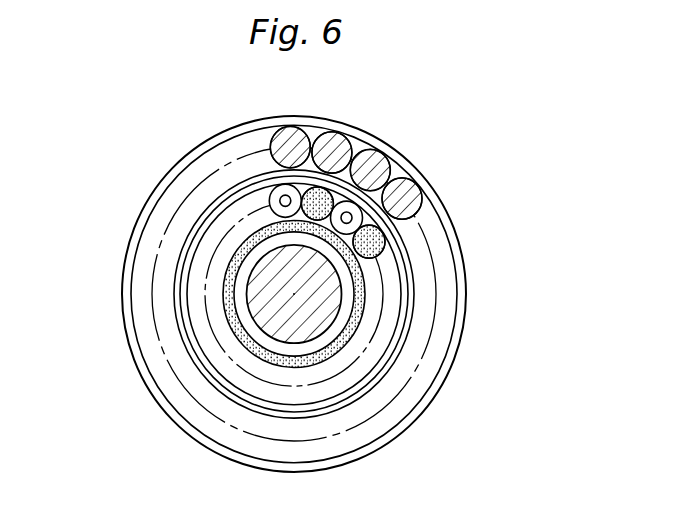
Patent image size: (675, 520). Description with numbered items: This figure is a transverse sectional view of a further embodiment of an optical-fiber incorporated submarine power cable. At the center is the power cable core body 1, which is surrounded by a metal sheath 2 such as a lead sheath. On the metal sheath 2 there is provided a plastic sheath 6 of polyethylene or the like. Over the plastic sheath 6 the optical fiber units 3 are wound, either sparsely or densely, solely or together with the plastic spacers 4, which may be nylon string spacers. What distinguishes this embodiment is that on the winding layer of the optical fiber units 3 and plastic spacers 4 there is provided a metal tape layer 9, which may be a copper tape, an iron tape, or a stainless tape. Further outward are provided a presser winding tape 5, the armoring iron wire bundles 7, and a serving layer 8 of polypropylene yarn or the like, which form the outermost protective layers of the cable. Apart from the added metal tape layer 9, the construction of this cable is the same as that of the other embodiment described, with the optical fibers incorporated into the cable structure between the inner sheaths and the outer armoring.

The power cable core body 1 is at (330, 320).
The metal sheath 2 is at (348, 312).
The optical fiber unit 3 is at (267, 190).
The plastic spacer 4 is at (385, 243).
The presser winding tape 5 is at (182, 332).
The plastic sheath 6 is at (372, 290).
The armoring wire 7 is at (392, 154).
The serving layer 8 is at (400, 437).
The metal tape layer 9 is at (188, 268).